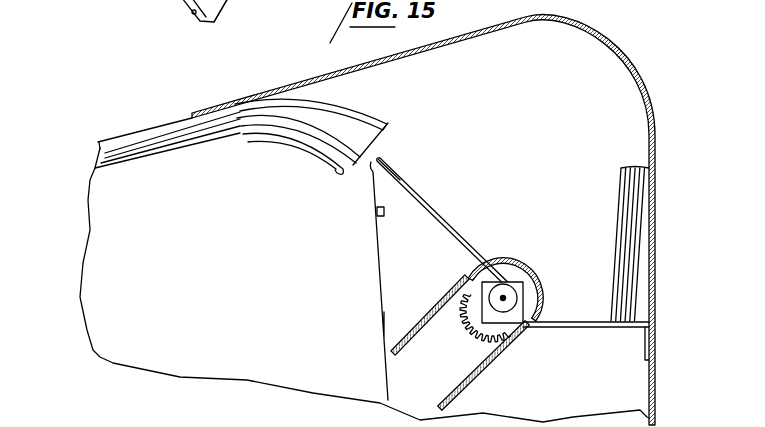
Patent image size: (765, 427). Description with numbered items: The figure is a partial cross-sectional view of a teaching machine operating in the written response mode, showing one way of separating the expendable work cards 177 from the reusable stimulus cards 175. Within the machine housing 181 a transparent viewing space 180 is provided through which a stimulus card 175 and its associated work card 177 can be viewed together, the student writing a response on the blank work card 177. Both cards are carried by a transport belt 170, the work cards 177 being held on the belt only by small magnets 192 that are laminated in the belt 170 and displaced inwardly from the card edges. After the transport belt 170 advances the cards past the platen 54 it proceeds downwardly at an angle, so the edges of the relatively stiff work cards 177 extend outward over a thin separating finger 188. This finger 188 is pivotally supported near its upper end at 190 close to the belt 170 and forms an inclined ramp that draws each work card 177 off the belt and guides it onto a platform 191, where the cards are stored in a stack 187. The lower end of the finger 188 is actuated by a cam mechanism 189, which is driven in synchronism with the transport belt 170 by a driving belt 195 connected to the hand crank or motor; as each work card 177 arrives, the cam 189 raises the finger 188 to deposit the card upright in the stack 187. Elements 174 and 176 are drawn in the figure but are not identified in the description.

The platen 54 is at (204, 135).
The transport belt 170 is at (372, 246).
The panel edge 174 is at (381, 325).
The stimulus card 175 is at (377, 211).
The link 176 is at (221, 22).
The work card 177 is at (397, 152).
The transparent viewing space 180 is at (187, 111).
The machine housing 181 is at (627, 56).
The stack 187 is at (637, 168).
The separating finger 188 is at (447, 223).
The cam mechanism 189 is at (500, 290).
The pivot 190 is at (406, 188).
The platform 191 is at (583, 327).
The magnet 192 is at (167, 3).
The driving belt 195 is at (483, 364).